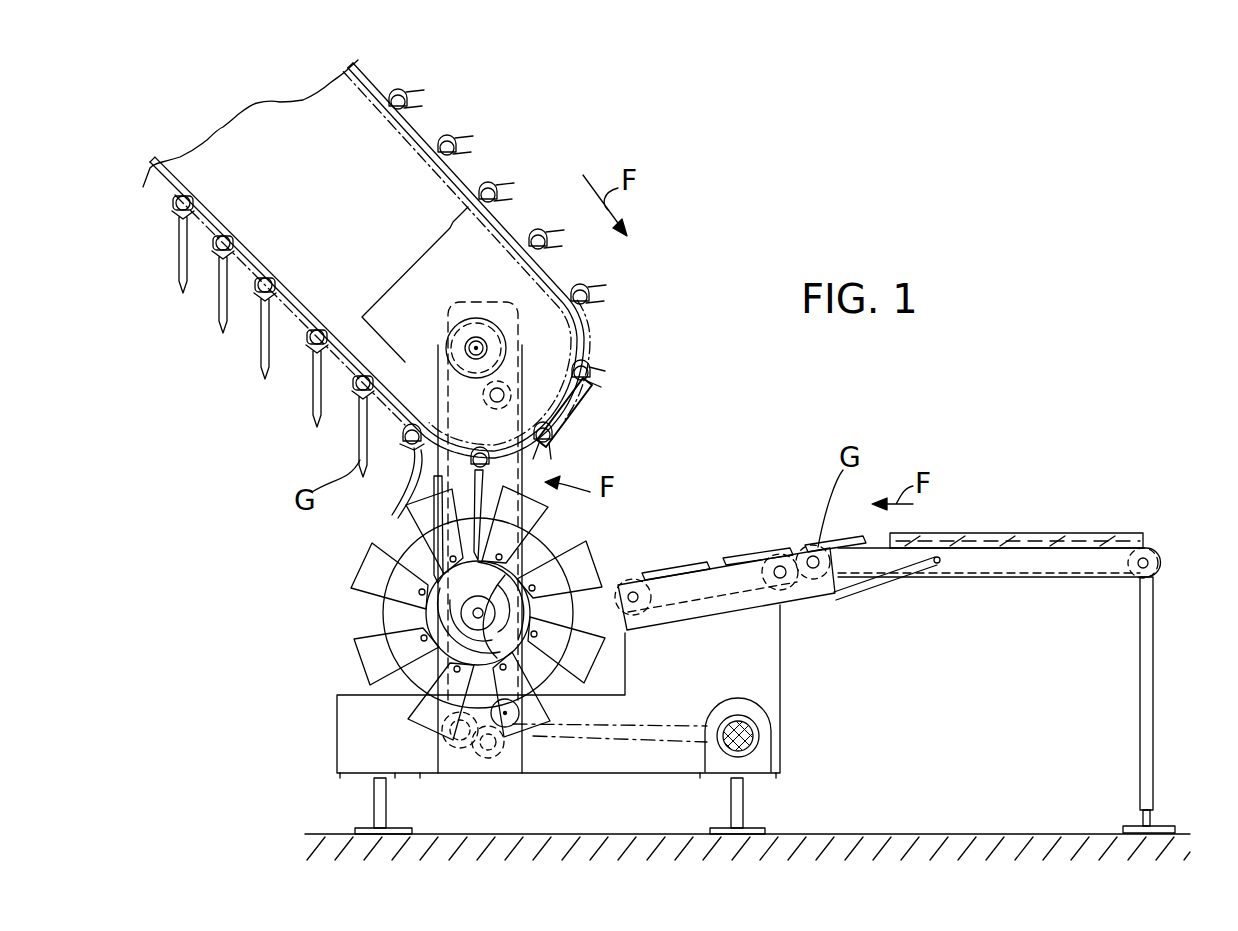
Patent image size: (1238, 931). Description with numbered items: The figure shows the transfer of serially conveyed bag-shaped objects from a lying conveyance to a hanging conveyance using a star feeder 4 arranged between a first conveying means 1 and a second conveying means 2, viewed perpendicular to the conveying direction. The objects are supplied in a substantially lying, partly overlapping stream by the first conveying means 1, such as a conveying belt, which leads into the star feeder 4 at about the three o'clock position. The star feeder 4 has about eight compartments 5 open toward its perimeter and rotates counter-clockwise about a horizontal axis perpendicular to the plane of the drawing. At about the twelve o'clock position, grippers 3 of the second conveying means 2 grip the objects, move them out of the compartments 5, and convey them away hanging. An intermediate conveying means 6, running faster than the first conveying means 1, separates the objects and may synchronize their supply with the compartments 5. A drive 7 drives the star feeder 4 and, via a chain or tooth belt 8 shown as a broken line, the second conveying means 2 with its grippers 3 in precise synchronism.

The first conveying means 1 is at (1057, 520).
The second conveying means 2 is at (488, 160).
The grippers 3 is at (548, 238).
The star feeder 4 is at (603, 546).
The compartments 5 is at (394, 556).
The intermediate conveying means 6 is at (758, 538).
The drive 7 is at (754, 743).
The chain or tooth belt 8 is at (515, 478).